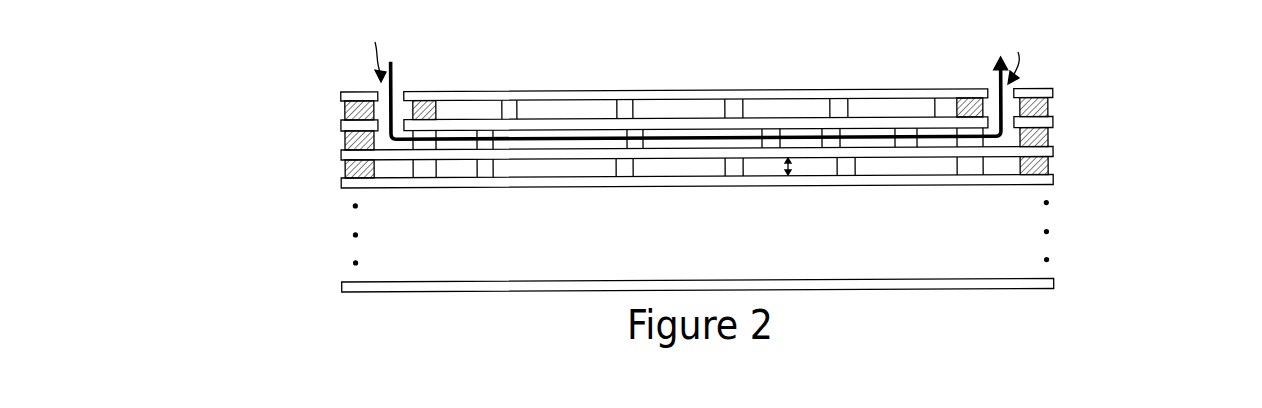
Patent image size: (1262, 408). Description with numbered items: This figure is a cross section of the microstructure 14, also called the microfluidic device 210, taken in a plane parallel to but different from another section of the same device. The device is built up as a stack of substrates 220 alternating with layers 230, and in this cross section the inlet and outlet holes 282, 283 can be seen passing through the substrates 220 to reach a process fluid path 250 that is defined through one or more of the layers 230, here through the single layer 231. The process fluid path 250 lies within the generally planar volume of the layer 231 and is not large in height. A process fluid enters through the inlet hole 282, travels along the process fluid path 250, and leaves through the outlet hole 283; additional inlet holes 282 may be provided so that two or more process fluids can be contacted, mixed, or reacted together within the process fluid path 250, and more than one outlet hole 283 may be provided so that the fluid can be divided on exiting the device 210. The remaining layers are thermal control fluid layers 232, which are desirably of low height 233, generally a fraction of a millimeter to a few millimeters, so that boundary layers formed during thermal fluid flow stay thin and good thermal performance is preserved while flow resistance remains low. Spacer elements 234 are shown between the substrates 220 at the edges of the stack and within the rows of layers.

The microstructure 14 is at (701, 267).
The microfluidic device 210 is at (701, 233).
The substrates 220 is at (1043, 178).
The layers 230 is at (683, 163).
The layer 231 is at (812, 133).
The thermal control fluid layer 232 is at (578, 108).
The height 233 is at (782, 162).
The spacers 234 is at (345, 165).
The process fluid path 250 is at (393, 79).
The inlet hole 282 is at (379, 52).
The outlet hole 283 is at (1016, 58).